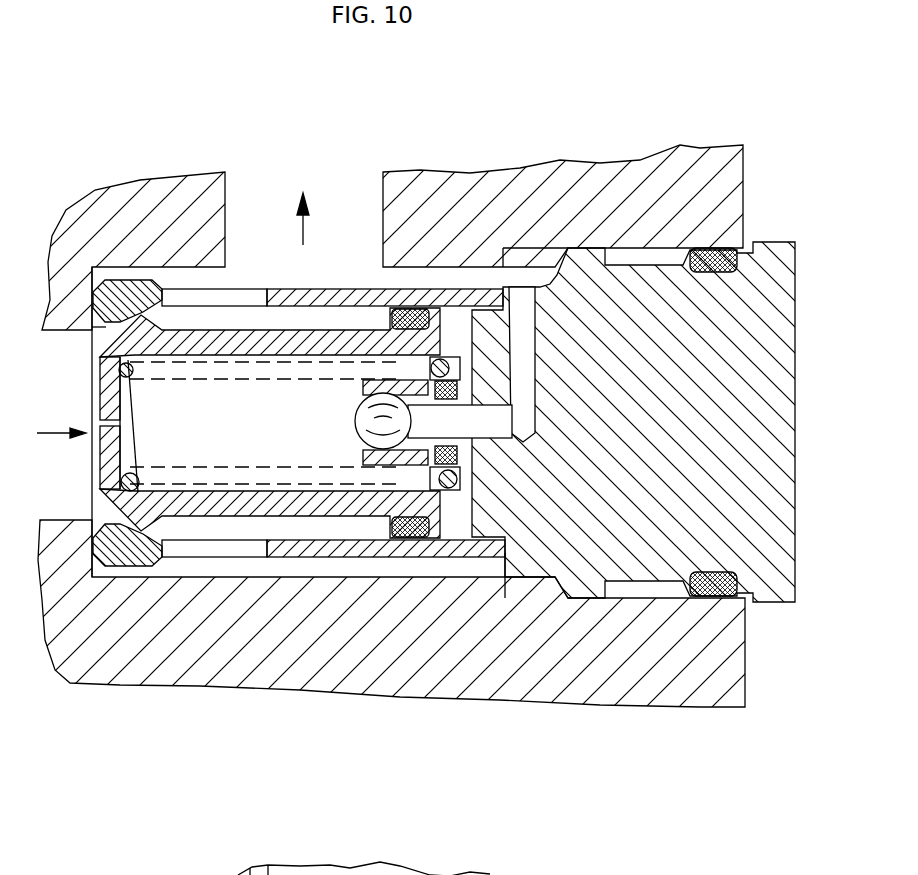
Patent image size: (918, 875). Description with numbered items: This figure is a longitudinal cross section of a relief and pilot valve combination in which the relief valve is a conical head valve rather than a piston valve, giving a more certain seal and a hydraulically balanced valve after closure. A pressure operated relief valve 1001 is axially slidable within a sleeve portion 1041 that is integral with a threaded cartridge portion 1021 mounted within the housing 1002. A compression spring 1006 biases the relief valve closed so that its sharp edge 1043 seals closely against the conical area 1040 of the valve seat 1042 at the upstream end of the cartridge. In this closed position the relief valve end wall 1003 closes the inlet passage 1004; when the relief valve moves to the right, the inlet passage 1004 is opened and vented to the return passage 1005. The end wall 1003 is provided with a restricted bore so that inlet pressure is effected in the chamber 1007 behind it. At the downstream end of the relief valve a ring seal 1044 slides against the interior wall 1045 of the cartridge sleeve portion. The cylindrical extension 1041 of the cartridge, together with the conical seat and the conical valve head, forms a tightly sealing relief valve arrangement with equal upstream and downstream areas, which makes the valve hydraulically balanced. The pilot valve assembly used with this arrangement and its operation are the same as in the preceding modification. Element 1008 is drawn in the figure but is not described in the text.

The pressure operated relief valve 1001 is at (337, 333).
The housing 1002 is at (600, 202).
The relief valve end wall 1003 is at (92, 480).
The inlet passage 1004 is at (72, 330).
The return passage 1005 is at (227, 218).
The compression spring 1006 is at (131, 482).
The chamber 1007 is at (267, 443).
The ball seal 1008 is at (428, 537).
The threaded cartridge portion 1021 is at (643, 525).
The conical area 1040 is at (133, 292).
The sleeve portion 1041 is at (412, 306).
The valve seat 1042 is at (140, 517).
The sharp edge 1043 is at (140, 312).
The ring seal 1044 is at (405, 473).
The interior wall 1045 is at (472, 302).